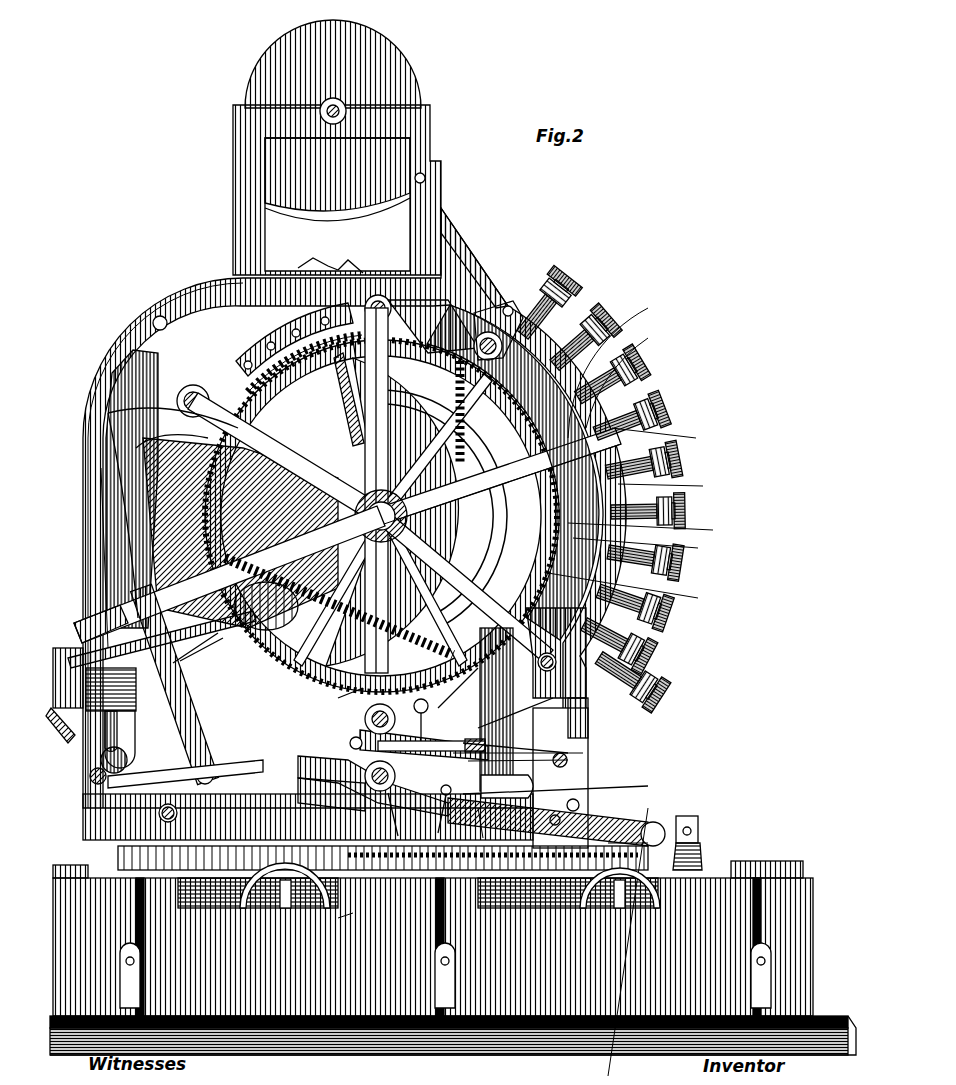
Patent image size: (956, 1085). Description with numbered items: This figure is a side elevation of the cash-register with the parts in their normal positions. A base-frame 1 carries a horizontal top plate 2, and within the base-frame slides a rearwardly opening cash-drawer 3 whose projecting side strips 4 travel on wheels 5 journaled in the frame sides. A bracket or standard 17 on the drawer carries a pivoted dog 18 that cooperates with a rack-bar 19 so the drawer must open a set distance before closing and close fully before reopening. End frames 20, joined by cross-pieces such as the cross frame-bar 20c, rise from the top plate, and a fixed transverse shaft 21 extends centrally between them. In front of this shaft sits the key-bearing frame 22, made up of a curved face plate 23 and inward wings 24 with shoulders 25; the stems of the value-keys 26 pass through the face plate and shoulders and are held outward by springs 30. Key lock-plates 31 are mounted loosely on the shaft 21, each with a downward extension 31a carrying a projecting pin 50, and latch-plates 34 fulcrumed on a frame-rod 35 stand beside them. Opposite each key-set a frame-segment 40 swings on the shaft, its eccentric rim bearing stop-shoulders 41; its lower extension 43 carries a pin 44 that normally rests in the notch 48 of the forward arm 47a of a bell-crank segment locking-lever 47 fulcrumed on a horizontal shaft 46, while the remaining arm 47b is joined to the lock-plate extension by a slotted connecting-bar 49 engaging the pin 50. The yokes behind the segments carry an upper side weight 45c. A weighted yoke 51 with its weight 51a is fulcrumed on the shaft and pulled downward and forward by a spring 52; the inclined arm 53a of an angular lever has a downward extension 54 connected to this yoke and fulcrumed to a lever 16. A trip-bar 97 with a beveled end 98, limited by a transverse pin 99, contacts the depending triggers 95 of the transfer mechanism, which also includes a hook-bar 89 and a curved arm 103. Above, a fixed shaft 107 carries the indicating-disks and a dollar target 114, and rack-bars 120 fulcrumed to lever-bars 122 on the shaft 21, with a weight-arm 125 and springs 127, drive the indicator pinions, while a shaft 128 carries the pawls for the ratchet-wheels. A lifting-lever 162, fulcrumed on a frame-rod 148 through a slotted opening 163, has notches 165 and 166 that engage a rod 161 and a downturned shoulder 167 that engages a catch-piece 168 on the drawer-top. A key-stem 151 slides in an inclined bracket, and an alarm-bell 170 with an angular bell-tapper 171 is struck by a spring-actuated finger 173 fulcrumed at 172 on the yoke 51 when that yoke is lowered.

The base-frame 1 is at (380, 1000).
The horizontal top plate 2 is at (622, 835).
The sliding cash-drawer 3 is at (360, 893).
The projecting side strips 4 is at (700, 866).
The wheels 5 is at (245, 890).
The lever 16 is at (225, 775).
The bracket or standard 17 is at (690, 820).
The pivoted dog 18 is at (692, 845).
The rack-bar 19 is at (585, 835).
The end frames 20 is at (176, 286).
The cross frame-bar 20c is at (190, 812).
The fixed transverse rod or shaft 21 is at (350, 500).
The key-bearing frame 22 is at (608, 355).
The external or face plate 23 is at (666, 435).
The inwardly-projecting wings or ribs 24 is at (672, 484).
The laterally-projecting rib or shoulder 25 is at (649, 548).
The value-keys 26 is at (568, 270).
The springs 30 is at (627, 375).
The key lock-plates 31 is at (636, 591).
The downward extension 31a is at (555, 725).
The latch-plates 34 is at (505, 705).
The transverse frame-rod 35 is at (545, 770).
The frame-segment 40 is at (590, 610).
The notches or stop-shoulders 41 is at (652, 526).
The extension 43 is at (339, 699).
The pin 44 is at (429, 721).
The upper side weight 45c is at (150, 425).
The horizontal shaft 46 is at (360, 710).
The segment locking-levers 47 is at (355, 725).
The forward and longer arm 47a is at (468, 688).
The remaining arm 47b is at (335, 747).
The rounding notch or recess 48 is at (431, 751).
The connecting-bar 49 is at (590, 755).
The projecting pin 50 is at (580, 745).
The weighted yoke 51 is at (229, 574).
The weight 51a is at (108, 485).
The spring 52 is at (350, 516).
The rearwardly-extending and downwardly-inclined arm 53a is at (320, 658).
The downward extension 54 is at (190, 735).
The hook-bar 89 is at (330, 266).
The trigger 95 is at (275, 362).
The trip-bar 97 is at (349, 400).
The beveled and inclined end portion 98 is at (335, 335).
The transverse pin 99 is at (347, 345).
The curved arm 103 is at (470, 305).
The fixed transverse rod or shaft 107 is at (327, 100).
The target 114 is at (395, 57).
The rack-bars 120 is at (440, 232).
The lever arm or bar 122 is at (470, 456).
The weight-arm 125 is at (266, 606).
The springs 127 is at (446, 376).
The transverse rod or shaft 128 is at (417, 168).
The frame-rod 148 is at (372, 780).
The key-stem 151 is at (650, 700).
The rod 161 is at (451, 817).
The lifting-lever 162 is at (383, 861).
The longitudinally-slotted opening 163 is at (412, 821).
The notch 165 is at (500, 846).
The notch 166 is at (573, 782).
The downturned outer end or shoulder 167 is at (655, 818).
The catch-piece 168 is at (628, 946).
The alarm-bell 170 is at (60, 640).
The angular bell-tapper 171 is at (125, 706).
The fulcrum of tapper-operating finger 172 is at (215, 622).
The spring-actuated tapper-operating finger 173 is at (225, 640).